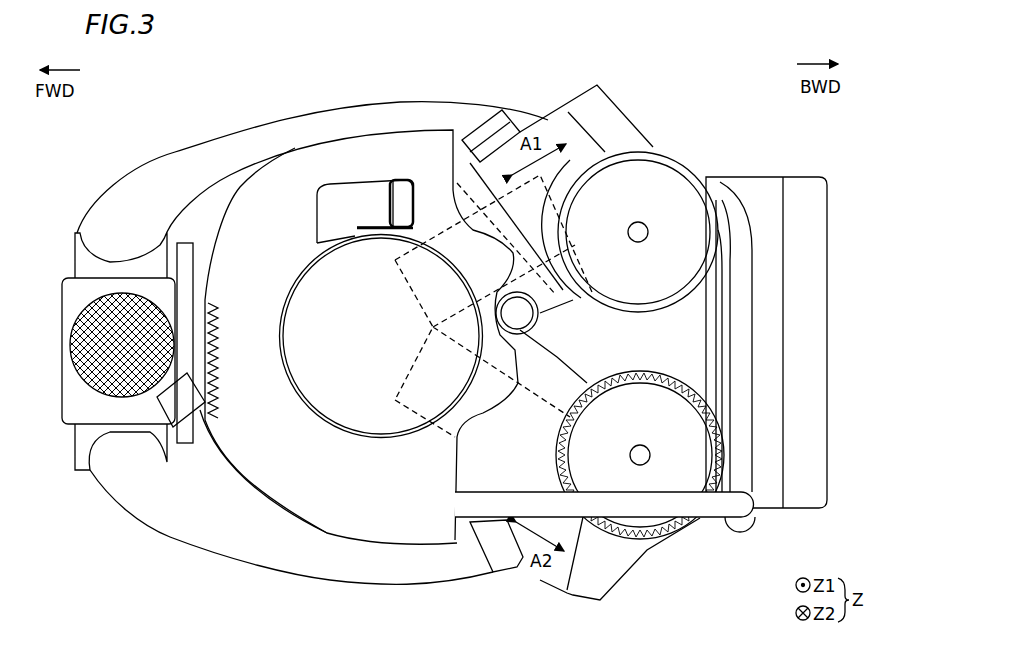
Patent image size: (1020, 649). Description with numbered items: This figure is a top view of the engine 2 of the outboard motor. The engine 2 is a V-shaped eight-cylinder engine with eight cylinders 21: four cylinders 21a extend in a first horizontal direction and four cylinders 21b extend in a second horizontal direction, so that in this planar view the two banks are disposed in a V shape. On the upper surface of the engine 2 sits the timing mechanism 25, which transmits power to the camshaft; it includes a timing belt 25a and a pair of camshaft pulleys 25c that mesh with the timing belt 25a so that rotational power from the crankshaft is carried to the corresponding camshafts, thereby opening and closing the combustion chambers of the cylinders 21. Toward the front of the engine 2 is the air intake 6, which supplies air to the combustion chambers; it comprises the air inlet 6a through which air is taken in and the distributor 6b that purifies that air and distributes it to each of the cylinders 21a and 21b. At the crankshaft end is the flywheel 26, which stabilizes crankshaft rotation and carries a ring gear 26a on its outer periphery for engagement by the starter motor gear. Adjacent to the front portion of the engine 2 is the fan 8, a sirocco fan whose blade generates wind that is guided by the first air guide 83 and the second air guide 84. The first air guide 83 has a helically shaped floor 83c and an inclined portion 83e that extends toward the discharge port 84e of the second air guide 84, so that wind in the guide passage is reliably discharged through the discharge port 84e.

The engine 2 is at (808, 150).
The air intake 6 is at (127, 270).
The air inlet 6a is at (100, 222).
The distributor 6b is at (159, 200).
The fan 8 is at (318, 488).
The cylinders 21 is at (557, 123).
The cylinders (first bank) 21a is at (544, 138).
The cylinders (second bank) 21b is at (478, 478).
The timing mechanism 25 is at (636, 362).
The timing belt 25a is at (700, 337).
The camshaft pulleys 25c is at (680, 180).
The flywheel 26 is at (193, 380).
The ring gear 26a is at (207, 458).
The first air guide 83 is at (337, 220).
The floor 83c is at (348, 145).
The inclined portion 83e is at (385, 207).
The second air guide 84 is at (312, 373).
The discharge port 84e is at (393, 225).